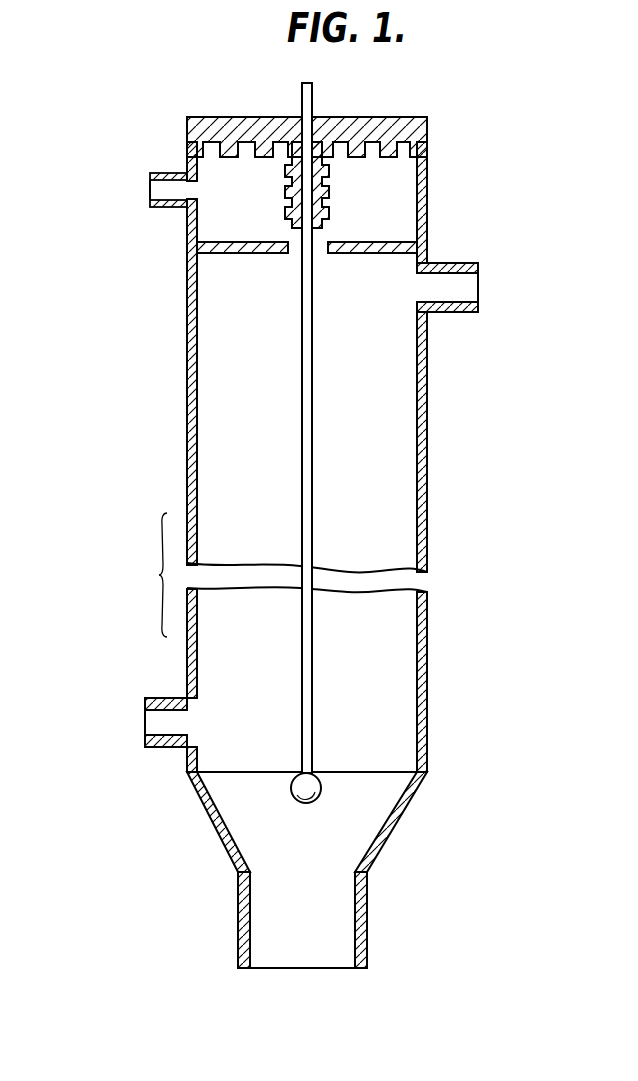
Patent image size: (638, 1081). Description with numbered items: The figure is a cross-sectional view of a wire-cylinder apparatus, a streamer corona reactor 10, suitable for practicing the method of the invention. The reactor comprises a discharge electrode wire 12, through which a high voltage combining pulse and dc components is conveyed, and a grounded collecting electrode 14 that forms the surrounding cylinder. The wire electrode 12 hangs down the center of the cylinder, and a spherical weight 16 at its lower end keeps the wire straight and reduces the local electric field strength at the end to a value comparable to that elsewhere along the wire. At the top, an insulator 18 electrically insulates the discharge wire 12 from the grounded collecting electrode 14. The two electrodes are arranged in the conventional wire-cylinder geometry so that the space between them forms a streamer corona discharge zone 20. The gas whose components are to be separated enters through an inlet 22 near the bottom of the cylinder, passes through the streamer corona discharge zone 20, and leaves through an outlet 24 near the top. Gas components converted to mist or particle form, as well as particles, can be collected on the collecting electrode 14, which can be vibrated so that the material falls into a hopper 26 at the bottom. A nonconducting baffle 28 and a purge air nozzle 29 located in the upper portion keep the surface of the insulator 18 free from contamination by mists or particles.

The streamer corona reactor 10 is at (108, 370).
The discharge electrode wire 12 is at (312, 405).
The collecting electrode 14 is at (422, 493).
The spherical weight 16 is at (293, 796).
The insulator 18 is at (327, 176).
The streamer corona discharge zone 20 is at (257, 486).
The inlet 22 is at (156, 731).
The outlet 24 is at (478, 281).
The hopper 26 is at (315, 917).
The nonconducting baffle 28 is at (393, 243).
The purge air nozzle 29 is at (148, 183).